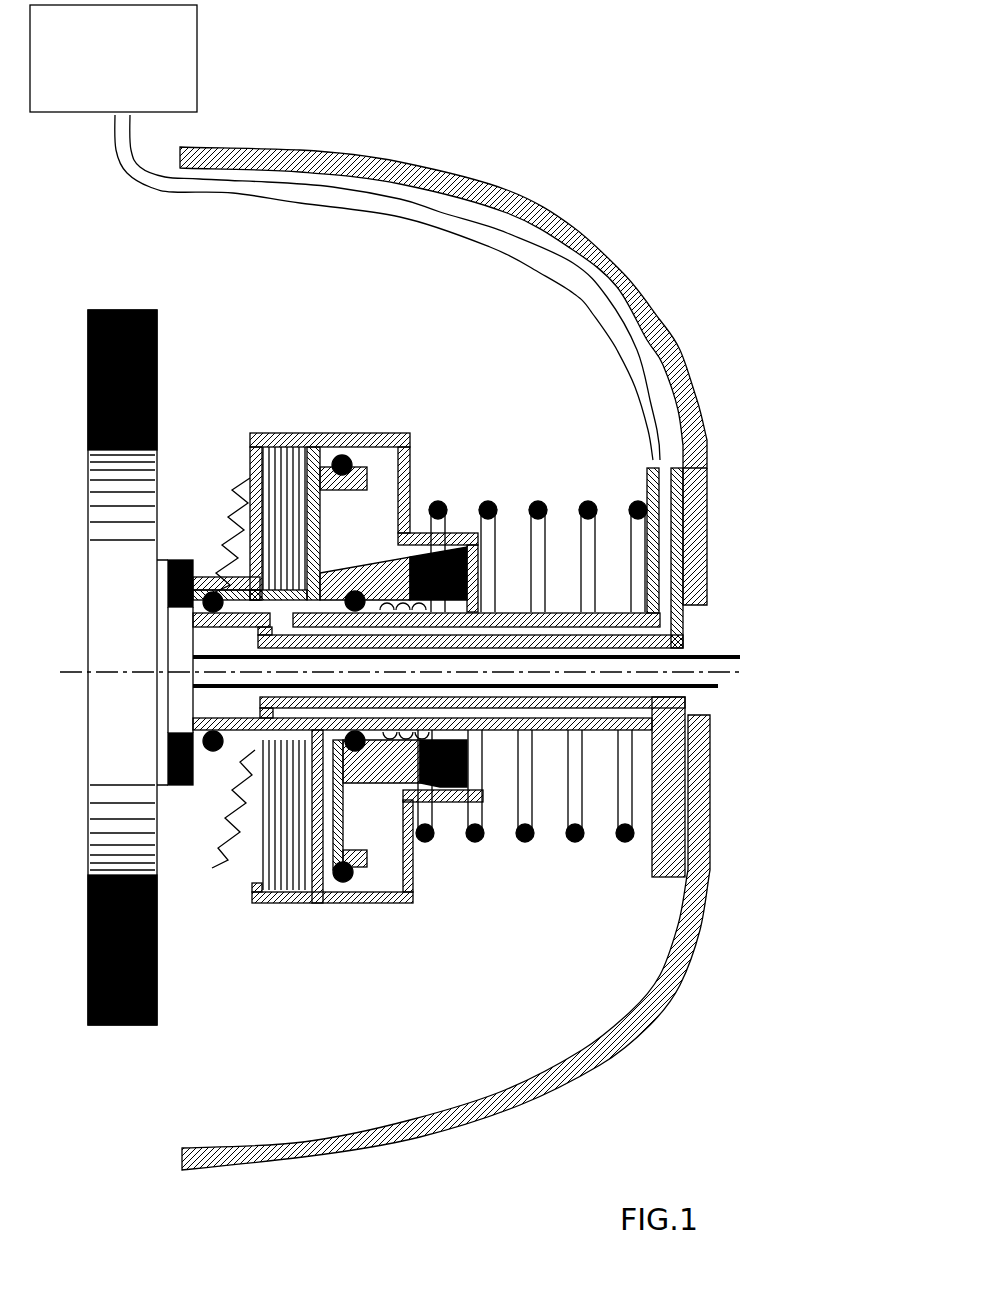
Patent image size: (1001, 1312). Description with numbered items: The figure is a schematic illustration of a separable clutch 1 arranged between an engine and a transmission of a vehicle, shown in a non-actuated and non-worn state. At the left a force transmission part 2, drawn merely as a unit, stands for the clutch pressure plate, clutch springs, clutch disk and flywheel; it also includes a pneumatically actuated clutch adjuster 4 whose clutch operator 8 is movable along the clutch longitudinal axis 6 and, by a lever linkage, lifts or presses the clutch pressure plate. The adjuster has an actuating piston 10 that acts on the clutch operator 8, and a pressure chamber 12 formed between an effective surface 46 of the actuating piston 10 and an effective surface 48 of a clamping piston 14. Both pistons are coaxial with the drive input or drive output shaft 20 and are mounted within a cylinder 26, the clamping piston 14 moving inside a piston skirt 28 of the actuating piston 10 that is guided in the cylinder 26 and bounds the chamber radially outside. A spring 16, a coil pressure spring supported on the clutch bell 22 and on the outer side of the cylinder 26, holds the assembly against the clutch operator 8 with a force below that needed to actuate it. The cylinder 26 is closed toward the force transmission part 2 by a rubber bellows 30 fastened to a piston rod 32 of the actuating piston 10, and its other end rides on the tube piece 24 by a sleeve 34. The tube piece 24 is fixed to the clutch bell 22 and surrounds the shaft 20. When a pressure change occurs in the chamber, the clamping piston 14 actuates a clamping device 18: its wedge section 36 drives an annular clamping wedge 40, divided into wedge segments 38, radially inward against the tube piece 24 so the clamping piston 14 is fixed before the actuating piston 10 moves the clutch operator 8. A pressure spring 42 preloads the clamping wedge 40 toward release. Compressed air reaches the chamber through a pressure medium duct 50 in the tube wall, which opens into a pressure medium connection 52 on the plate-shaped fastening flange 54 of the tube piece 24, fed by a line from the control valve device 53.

The separable clutch 1 is at (657, 193).
The force transmission part 2 is at (88, 893).
The clutch adjuster 4 is at (225, 1002).
The clutch longitudinal axis 6 is at (68, 675).
The clutch operator 8 is at (175, 713).
The actuating piston 10 is at (257, 593).
The pressure chamber 12 is at (325, 520).
The clamping piston 14 is at (360, 553).
The spring 16 is at (662, 457).
The clamping device 18 is at (476, 492).
The drive input or drive output shaft 20 is at (693, 660).
The clutch bell 22 is at (643, 993).
The tube piece 24 is at (560, 613).
The cylinder 26 is at (303, 433).
The piston skirt 28 is at (367, 433).
The rubber bellows 30 is at (250, 487).
The piston rod 32 is at (255, 750).
The sleeve 34 is at (500, 613).
The wedge section 36 is at (383, 893).
The wedge segments 38 is at (433, 830).
The clamping wedge 40 is at (480, 803).
The pressure spring 42 is at (410, 527).
The effective surface 46 is at (305, 800).
The effective surface 48 is at (260, 850).
The pressure medium duct 50 is at (560, 712).
The pressure medium connection 52 is at (672, 462).
The control valve device 53 is at (200, 45).
The fastening flange 54 is at (708, 515).